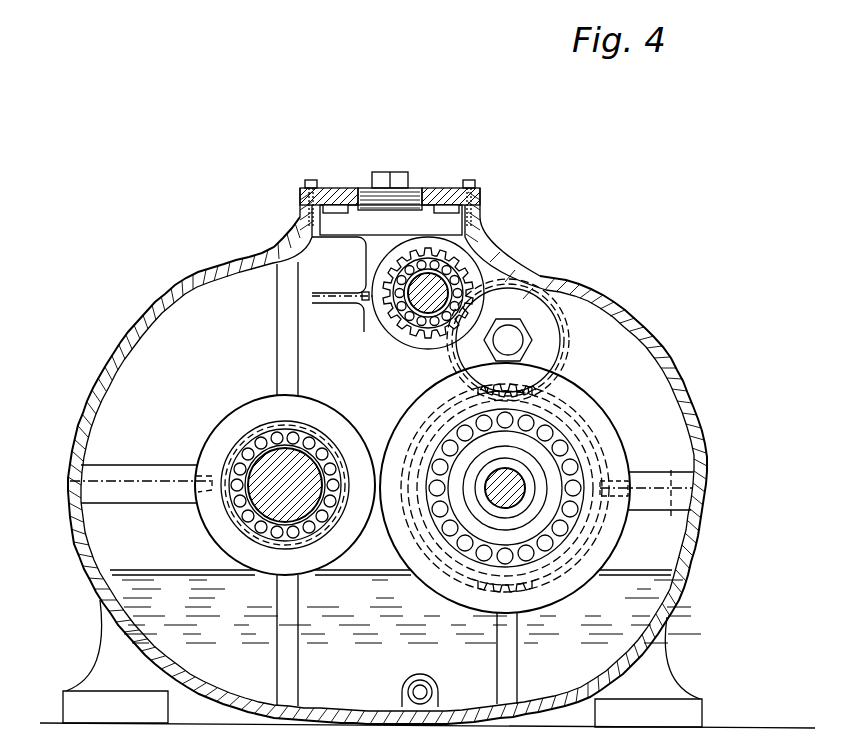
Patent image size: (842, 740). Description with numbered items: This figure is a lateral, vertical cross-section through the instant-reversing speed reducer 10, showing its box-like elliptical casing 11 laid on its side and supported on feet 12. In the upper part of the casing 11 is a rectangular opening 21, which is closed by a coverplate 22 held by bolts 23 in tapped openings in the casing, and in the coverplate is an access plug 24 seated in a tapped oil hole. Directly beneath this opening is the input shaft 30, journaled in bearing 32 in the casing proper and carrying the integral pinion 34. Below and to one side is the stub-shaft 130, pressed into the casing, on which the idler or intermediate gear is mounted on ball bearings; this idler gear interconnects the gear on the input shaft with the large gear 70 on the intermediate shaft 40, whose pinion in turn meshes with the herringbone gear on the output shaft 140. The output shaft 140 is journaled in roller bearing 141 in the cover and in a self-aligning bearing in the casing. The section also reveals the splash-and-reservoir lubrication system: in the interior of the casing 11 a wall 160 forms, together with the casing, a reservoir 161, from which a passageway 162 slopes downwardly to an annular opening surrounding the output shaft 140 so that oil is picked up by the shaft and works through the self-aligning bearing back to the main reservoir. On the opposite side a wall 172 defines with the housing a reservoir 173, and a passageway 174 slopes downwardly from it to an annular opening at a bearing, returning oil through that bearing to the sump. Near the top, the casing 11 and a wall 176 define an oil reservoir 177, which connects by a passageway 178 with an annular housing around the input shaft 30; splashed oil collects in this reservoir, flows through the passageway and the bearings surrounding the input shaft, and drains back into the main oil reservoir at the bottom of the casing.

The instant-reversing speed reducer 10 is at (590, 286).
The casing 11 is at (537, 279).
The feet 12 is at (66, 704).
The rectangular opening 21 is at (461, 223).
The coverplate 22 is at (429, 197).
The bolts 23 is at (305, 187).
The access plug 24 is at (393, 179).
The input shaft 30 is at (400, 307).
The bearing 32 is at (446, 277).
The pinion 34 is at (412, 262).
The shaft 40 is at (499, 470).
The gear 70 is at (555, 557).
The stub-shaft 130 is at (508, 353).
The output shaft 140 is at (330, 482).
The roller bearing 141 is at (298, 441).
The wall 160 is at (140, 466).
The reservoir 161 is at (101, 478).
The passageway 162 is at (197, 490).
The wall 172 is at (645, 472).
The reservoir 173 is at (664, 510).
The passageway 174 is at (616, 497).
The wall 176 is at (332, 265).
The oil reservoir 177 is at (329, 288).
The passageway 178 is at (362, 311).